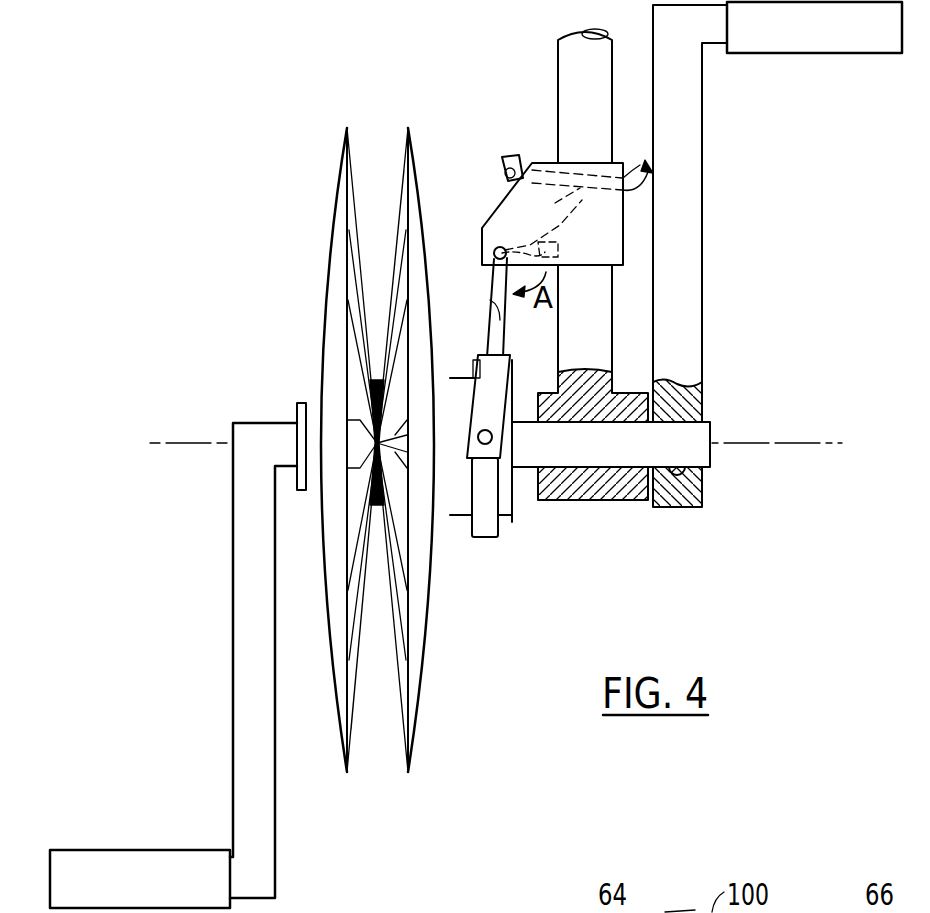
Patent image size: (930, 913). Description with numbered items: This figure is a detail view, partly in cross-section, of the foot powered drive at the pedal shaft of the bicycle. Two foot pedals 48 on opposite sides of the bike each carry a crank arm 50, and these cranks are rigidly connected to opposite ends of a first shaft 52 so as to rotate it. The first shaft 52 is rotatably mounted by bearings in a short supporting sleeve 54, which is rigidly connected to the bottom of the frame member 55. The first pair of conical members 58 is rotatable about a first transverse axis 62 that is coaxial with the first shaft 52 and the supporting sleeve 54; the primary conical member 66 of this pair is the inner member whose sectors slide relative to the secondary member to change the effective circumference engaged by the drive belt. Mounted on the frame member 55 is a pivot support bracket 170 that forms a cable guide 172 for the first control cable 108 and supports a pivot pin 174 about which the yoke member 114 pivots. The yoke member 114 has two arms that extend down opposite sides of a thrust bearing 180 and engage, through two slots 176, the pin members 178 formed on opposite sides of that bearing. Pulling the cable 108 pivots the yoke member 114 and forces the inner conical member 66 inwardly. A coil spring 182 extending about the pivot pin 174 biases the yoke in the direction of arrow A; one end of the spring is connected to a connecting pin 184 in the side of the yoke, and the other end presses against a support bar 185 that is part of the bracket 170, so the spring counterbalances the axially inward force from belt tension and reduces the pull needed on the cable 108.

The foot pedal 48 is at (813, 35).
The crank arm 50 is at (687, 138).
The first shaft 52 is at (697, 455).
The supporting sleeve 54 is at (632, 500).
The frame member 55 is at (572, 62).
The first pair of conical members 58 is at (326, 247).
The first transverse axis 62 is at (776, 443).
The primary conical member 66 is at (423, 636).
The first control cable 108 is at (623, 188).
The yoke member 114 is at (502, 165).
The pivot support bracket 170 is at (548, 163).
The cable guide 172 is at (556, 203).
The pivot pin 174 is at (495, 253).
The slot 176 is at (483, 470).
The pin member 178 is at (492, 441).
The thrust bearing 180 is at (498, 525).
The coil spring 182 is at (567, 215).
The connecting pin 184 is at (500, 303).
The support bar 185 is at (558, 247).